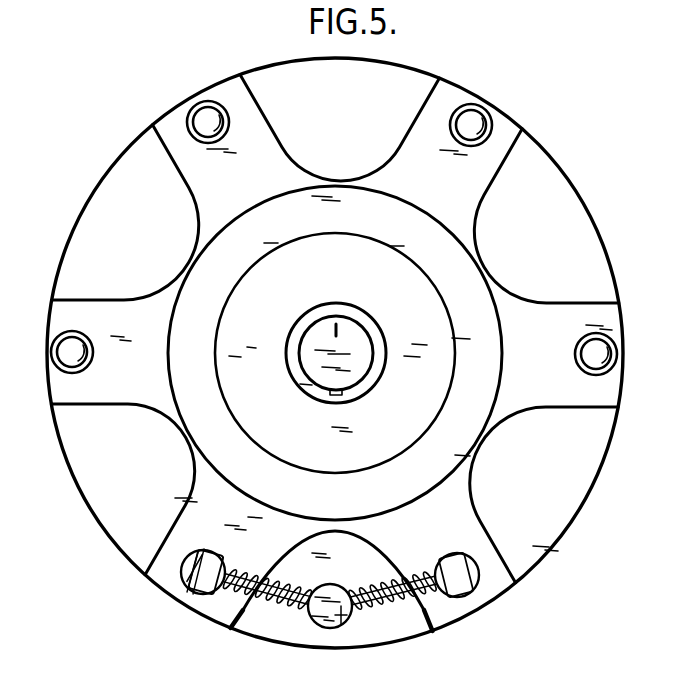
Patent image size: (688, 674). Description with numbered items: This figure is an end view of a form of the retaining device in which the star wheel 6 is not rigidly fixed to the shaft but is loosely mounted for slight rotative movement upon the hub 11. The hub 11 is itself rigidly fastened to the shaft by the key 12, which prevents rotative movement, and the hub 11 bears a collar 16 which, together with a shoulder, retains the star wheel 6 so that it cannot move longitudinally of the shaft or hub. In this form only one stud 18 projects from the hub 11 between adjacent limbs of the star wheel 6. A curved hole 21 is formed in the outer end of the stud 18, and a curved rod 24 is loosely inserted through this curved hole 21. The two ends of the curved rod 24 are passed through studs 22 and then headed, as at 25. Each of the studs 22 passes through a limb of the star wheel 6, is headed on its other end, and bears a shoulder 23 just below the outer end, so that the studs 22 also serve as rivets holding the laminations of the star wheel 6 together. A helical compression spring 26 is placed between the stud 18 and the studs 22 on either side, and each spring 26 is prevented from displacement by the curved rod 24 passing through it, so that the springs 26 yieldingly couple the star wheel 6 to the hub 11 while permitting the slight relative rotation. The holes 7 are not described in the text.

The star wheel 6 is at (335, 353).
The mounting holes 7 is at (618, 357).
The hub 11 is at (68, 446).
The key 12 is at (331, 398).
The collar 16 is at (335, 356).
The stud 18 is at (318, 626).
The curved hole 21 is at (342, 626).
The studs 22 is at (193, 585).
The shoulder 23 is at (201, 550).
The curved rod 24 is at (252, 610).
The headed ends 25 is at (192, 567).
The helical compression spring 26 is at (233, 607).